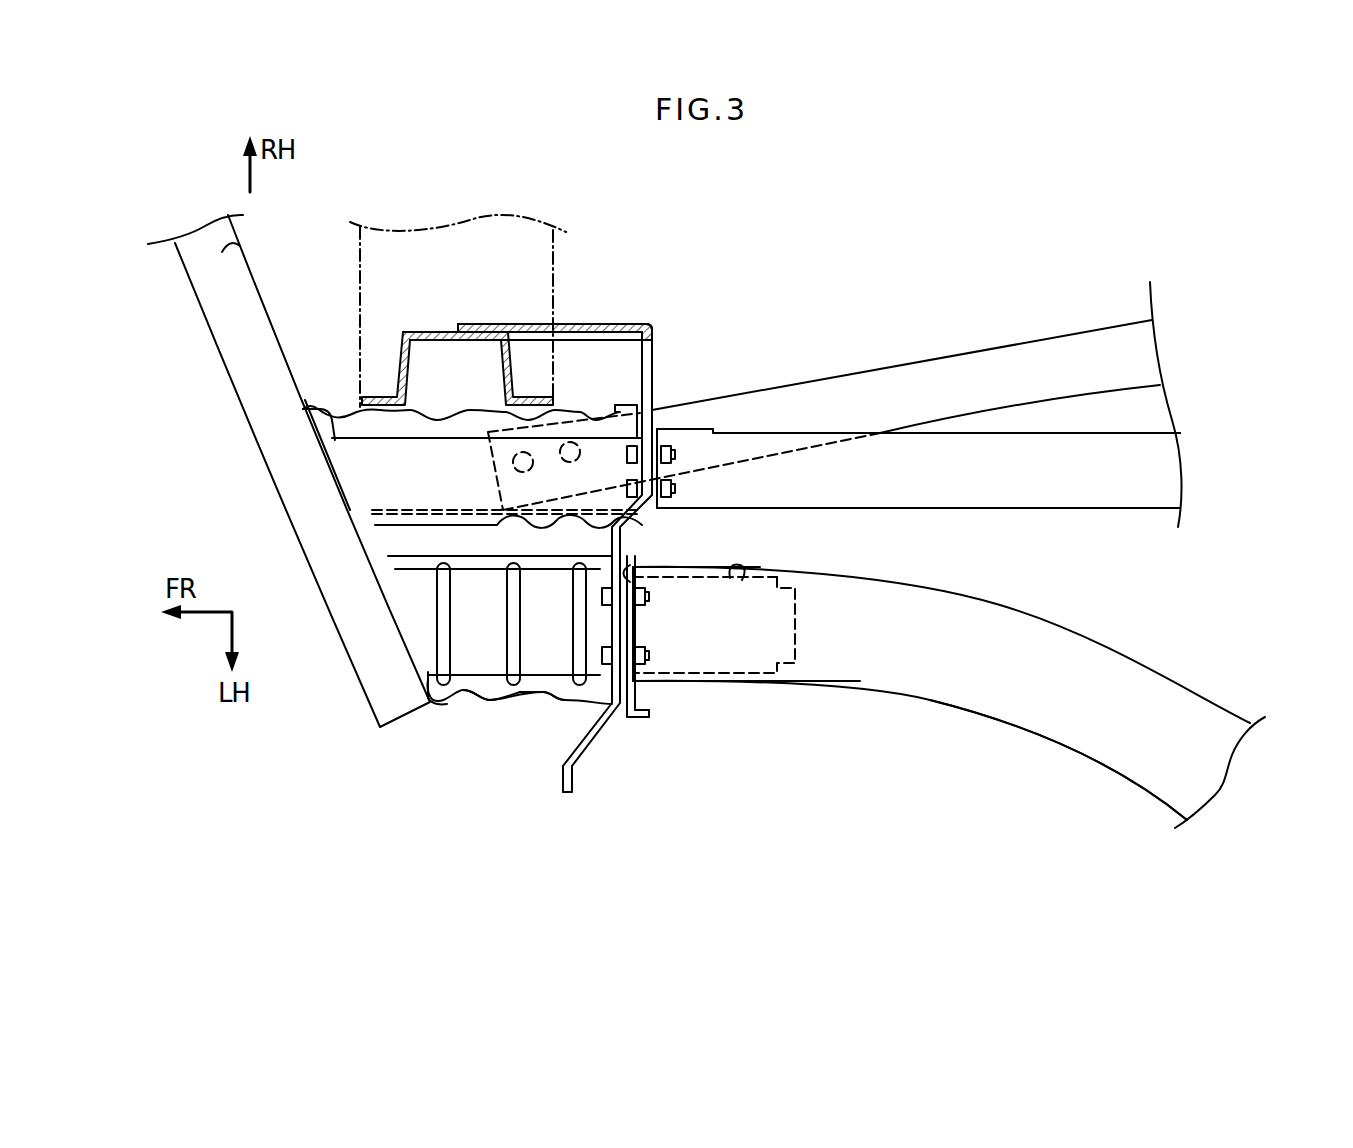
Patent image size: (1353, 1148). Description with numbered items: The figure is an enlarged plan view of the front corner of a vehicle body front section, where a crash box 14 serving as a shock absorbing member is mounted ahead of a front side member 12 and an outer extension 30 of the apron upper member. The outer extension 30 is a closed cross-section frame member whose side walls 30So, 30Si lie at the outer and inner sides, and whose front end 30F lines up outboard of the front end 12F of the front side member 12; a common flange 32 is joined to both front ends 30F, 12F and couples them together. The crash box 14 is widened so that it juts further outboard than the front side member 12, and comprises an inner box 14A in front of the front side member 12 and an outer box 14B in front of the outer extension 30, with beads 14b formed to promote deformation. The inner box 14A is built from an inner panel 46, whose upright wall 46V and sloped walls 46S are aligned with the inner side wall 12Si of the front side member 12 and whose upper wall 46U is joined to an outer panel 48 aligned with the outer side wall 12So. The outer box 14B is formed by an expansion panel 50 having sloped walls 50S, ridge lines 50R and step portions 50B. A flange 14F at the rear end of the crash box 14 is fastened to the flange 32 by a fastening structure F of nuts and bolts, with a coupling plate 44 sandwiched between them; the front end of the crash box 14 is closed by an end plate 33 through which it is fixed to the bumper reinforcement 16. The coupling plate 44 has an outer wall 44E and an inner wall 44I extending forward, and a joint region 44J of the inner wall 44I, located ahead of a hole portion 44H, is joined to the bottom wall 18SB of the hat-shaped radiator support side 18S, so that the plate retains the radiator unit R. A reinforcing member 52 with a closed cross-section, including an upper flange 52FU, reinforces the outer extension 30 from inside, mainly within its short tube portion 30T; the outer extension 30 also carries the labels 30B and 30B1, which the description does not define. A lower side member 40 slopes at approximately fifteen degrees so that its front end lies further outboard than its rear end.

The bumper reinforcement 16 is at (245, 240).
The radiator support side 18S is at (396, 356).
The bottom wall 18SB is at (433, 331).
The joint region 44J is at (468, 324).
The radiator unit R is at (555, 272).
The inner wall 44I is at (620, 324).
The hole portion 44H is at (655, 328).
The coupling plate 44 is at (660, 366).
The lower side member 40 is at (1034, 348).
The sloped walls 46S is at (340, 416).
The upper wall 46U is at (418, 433).
The inner panel 46 is at (437, 432).
The front end 12F is at (648, 338).
The beads 14b is at (575, 413).
The side wall 12Si is at (1072, 433).
The inner box 14A is at (366, 450).
The outer panel 48 is at (388, 510).
The upright wall 46V is at (473, 407).
The fastening structure F is at (680, 452).
The front side member 12 is at (1032, 492).
The side wall 12So is at (1112, 510).
The end plate 33 is at (348, 489).
The step portions 50B is at (597, 562).
The front end 30F is at (636, 567).
The upper flange 52FU is at (790, 590).
The outer extension 30 is at (1108, 644).
The flange 14F is at (615, 628).
The side wall 30Si is at (740, 580).
The outer box 14B is at (423, 590).
The ridge lines 50R is at (541, 694).
The side wall 30So is at (707, 682).
The short tube portion 30T is at (673, 673).
The bottom wall of member 30 30B is at (760, 682).
The reinforcing member 52 is at (800, 680).
The expansion panel 50 is at (480, 655).
The sloped walls 50S is at (491, 693).
The flange 32 is at (641, 720).
The outer wall 44E is at (574, 778).
The crash box 14 is at (483, 716).
The lower edge of member 30 30B1 is at (1030, 734).